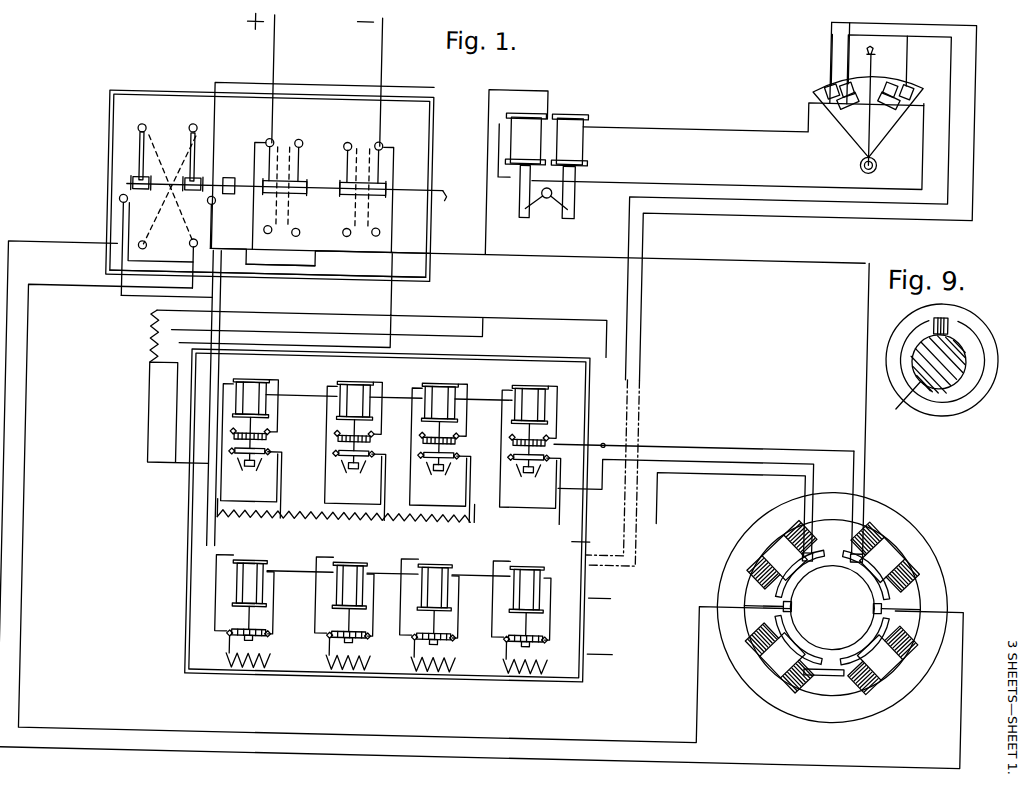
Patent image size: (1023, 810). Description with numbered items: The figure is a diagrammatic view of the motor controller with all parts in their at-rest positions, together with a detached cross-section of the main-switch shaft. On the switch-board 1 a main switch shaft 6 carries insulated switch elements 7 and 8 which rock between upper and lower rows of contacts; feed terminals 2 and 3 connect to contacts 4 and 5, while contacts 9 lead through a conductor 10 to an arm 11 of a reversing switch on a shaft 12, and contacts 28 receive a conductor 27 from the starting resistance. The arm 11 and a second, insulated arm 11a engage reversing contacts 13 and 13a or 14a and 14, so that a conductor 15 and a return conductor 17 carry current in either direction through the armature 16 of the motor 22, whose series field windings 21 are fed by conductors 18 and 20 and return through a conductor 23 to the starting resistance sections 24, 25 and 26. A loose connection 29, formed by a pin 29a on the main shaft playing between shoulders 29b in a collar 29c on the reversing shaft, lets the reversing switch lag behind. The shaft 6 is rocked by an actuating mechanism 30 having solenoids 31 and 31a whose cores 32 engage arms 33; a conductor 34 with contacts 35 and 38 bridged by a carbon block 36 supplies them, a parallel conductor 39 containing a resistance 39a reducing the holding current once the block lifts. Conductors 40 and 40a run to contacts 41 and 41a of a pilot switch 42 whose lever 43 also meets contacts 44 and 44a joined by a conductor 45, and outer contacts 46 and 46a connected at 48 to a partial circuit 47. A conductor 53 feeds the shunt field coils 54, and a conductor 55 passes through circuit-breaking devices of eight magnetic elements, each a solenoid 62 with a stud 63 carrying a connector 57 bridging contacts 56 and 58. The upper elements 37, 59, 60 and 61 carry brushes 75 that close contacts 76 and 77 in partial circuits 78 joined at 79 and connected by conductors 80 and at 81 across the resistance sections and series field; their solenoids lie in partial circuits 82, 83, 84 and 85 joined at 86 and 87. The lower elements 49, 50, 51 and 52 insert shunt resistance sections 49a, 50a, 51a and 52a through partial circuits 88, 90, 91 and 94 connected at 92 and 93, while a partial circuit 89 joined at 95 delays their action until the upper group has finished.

In FIG. 1, the switch-board 1 is at (103, 136).
In FIG. 1, the feed terminal 2 is at (382, 79).
In FIG. 1, the feed terminal 3 is at (274, 76).
In FIG. 1, the main switch contacts 4 is at (377, 147).
In FIG. 1, the main switch contacts 5 is at (259, 146).
In FIG. 1, the main switch shaft 6 is at (440, 198).
In FIG. 9, the main switch shaft 6 is at (923, 380).
In FIG. 1, the switch element 7 is at (352, 198).
In FIG. 1, the switch element 8 is at (278, 198).
In FIG. 1, the main switch contacts 9 is at (345, 188).
In FIG. 1, the conductor 10 is at (310, 89).
In FIG. 1, the reversing switch arm 11 is at (190, 158).
In FIG. 1, the reversing switch arm 11a is at (130, 152).
In FIG. 1, the reversing-switch shaft 12 is at (122, 192).
In FIG. 1, the reversing contact 13 is at (194, 113).
In FIG. 1, the reversing contact 13a is at (129, 113).
In FIG. 1, the reversing contact 14 is at (161, 236).
In FIG. 1, the reversing contact 14a is at (174, 257).
In FIG. 1, the conductor 15 is at (840, 756).
In FIG. 1, the armature 16 is at (832, 608).
In FIG. 1, the return conductor 17 is at (704, 709).
In FIG. 1, the conductor 18 is at (115, 209).
In FIG. 1, the conductor 20 is at (866, 476).
In FIG. 1, the series field windings 21 is at (850, 548).
In FIG. 1, the motor 22 is at (832, 607).
In FIG. 1, the conductor 23 is at (778, 434).
In FIG. 1, the starting resistance section 24 is at (356, 524).
In FIG. 1, the starting resistance section 25 is at (317, 503).
In FIG. 1, the starting resistance section 26 is at (218, 530).
In FIG. 1, the conductor 27 is at (178, 392).
In FIG. 1, the main switch contacts 28 is at (294, 144).
In FIG. 1, the loose or compensating connection 29 is at (226, 184).
In FIG. 9, the loose or compensating connection 29 is at (972, 352).
In FIG. 9, the pin or projection 29a is at (948, 316).
In FIG. 9, the shoulders 29b is at (905, 318).
In FIG. 9, the collar 29c is at (976, 386).
In FIG. 1, the switch actuating mechanism 30 is at (543, 164).
In FIG. 1, the solenoid 31 is at (515, 140).
In FIG. 1, the solenoid 31a is at (578, 148).
In FIG. 1, the cores 32 is at (515, 197).
In FIG. 1, the arms 33 is at (554, 209).
In FIG. 1, the conductor 34 is at (430, 297).
In FIG. 1, the contact 35 is at (230, 500).
In FIG. 1, the carbon block 36 is at (266, 490).
In FIG. 1, the magnetic element 37 is at (250, 384).
In FIG. 1, the contact 38 is at (305, 489).
In FIG. 1, the conductor 39 is at (100, 398).
In FIG. 1, the resistance 39a is at (131, 335).
In FIG. 1, the conductor 40 is at (724, 179).
In FIG. 1, the conductor 40a is at (708, 125).
In FIG. 1, the pilot switch contact 41 is at (883, 103).
In FIG. 1, the pilot switch contact 41a is at (848, 100).
In FIG. 1, the pilot switch 42 is at (859, 140).
In FIG. 1, the switch lever 43 is at (851, 173).
In FIG. 1, the contact 44 is at (902, 78).
In FIG. 1, the contact 44a is at (822, 78).
In FIG. 1, the conductor 45 is at (943, 160).
In FIG. 1, the contact 46 is at (892, 90).
In FIG. 1, the contact 46a is at (832, 94).
In FIG. 1, the partial circuit 47 is at (952, 212).
In FIG. 1, the connection 48 is at (210, 556).
In FIG. 1, the magnetic element 49 is at (245, 587).
In FIG. 1, the shunt field resistance section 49a is at (255, 691).
In FIG. 1, the magnetic element 50 is at (352, 566).
In FIG. 1, the shunt field resistance section 50a is at (352, 693).
In FIG. 1, the magnetic element 51 is at (448, 578).
In FIG. 1, the shunt field resistance section 51a is at (446, 696).
In FIG. 1, the magnetic element 52 is at (540, 578).
In FIG. 1, the shunt field resistance section 52a is at (536, 698).
In FIG. 1, the conductor 53 is at (866, 380).
In FIG. 1, the shunt field coils 54 is at (770, 548).
In FIG. 1, the conductor 55 is at (168, 648).
In FIG. 1, the contact 56 is at (453, 539).
In FIG. 1, the carbon contact brush 57 is at (403, 569).
In FIG. 1, the contact 58 is at (222, 451).
In FIG. 1, the magnetic element 59 is at (360, 384).
In FIG. 1, the magnetic element 60 is at (442, 384).
In FIG. 1, the magnetic element 61 is at (532, 384).
In FIG. 1, the solenoid 62 is at (388, 492).
In FIG. 1, the pendent stud 63 is at (357, 516).
In FIG. 1, the laminated copper brush 75 is at (232, 441).
In FIG. 1, the contact point 76 is at (433, 414).
In FIG. 1, the contact point 77 is at (228, 436).
In FIG. 1, the partial circuit 78 is at (438, 421).
In FIG. 1, the series connection 79 is at (410, 432).
In FIG. 1, the conductor 80 is at (360, 514).
In FIG. 1, the connection 81 is at (606, 442).
In FIG. 1, the partial circuit 82 is at (250, 410).
In FIG. 1, the partial circuit 83 is at (325, 367).
In FIG. 1, the partial circuit 84 is at (405, 383).
In FIG. 1, the partial circuit 85 is at (495, 380).
In FIG. 1, the series connection 86 is at (435, 366).
In FIG. 1, the circuit connection 87 is at (463, 494).
In FIG. 1, the partial circuit 88 is at (343, 622).
In FIG. 1, the partial circuit 89 is at (569, 540).
In FIG. 1, the partial circuit 90 is at (439, 589).
In FIG. 1, the partial circuit 91 is at (549, 593).
In FIG. 1, the series connection 92 is at (338, 642).
In FIG. 1, the connection 93 is at (233, 645).
In FIG. 1, the partial circuit 94 is at (604, 651).
In FIG. 1, the connection 95 is at (396, 554).